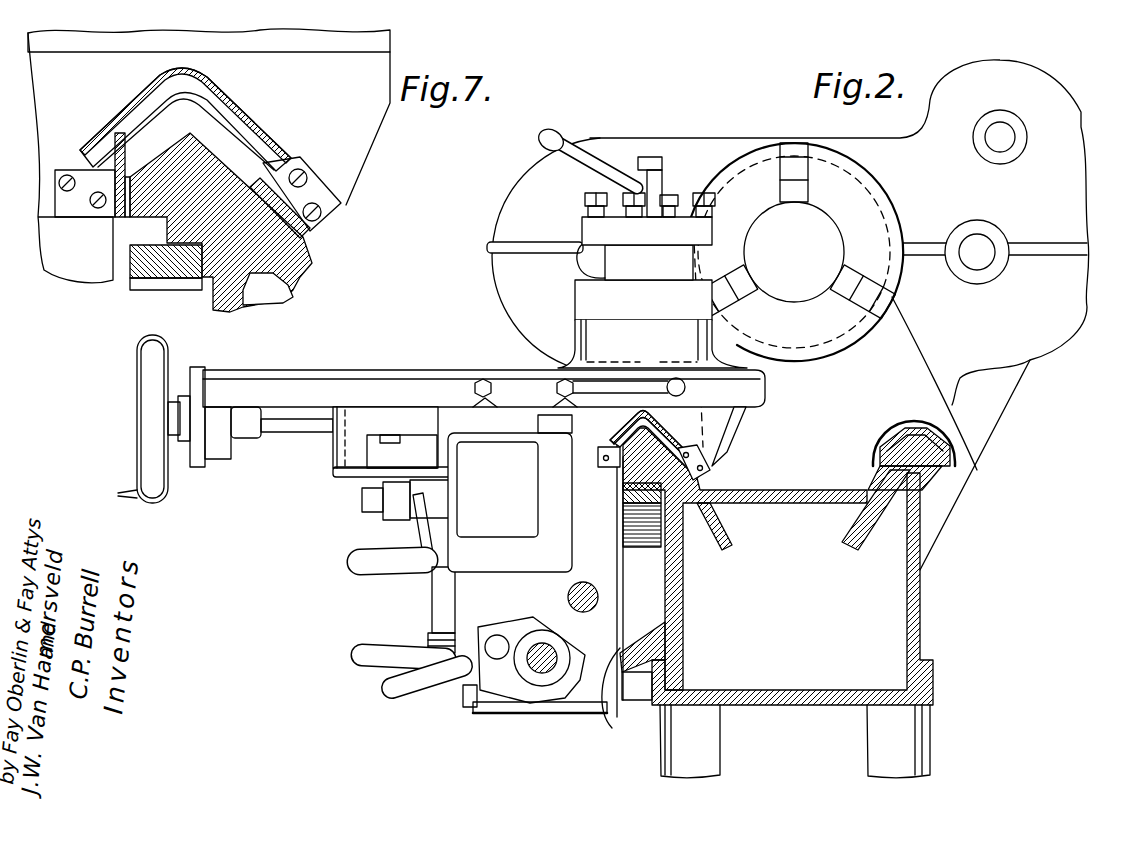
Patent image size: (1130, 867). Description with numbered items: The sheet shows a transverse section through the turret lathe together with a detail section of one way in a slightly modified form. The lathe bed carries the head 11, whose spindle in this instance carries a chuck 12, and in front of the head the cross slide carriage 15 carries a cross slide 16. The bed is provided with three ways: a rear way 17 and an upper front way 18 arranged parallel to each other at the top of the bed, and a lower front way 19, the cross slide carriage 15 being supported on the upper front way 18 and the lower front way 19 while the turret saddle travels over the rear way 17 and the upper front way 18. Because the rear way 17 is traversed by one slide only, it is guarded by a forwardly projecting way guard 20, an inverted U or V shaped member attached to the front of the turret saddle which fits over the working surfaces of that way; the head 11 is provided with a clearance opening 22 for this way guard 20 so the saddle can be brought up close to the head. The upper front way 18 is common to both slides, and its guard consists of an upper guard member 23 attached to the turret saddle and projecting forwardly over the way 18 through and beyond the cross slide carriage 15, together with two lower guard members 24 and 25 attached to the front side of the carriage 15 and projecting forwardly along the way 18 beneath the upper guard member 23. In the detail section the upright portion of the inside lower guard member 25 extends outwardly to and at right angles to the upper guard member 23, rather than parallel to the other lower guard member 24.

In FIG. 2, the head 11 is at (673, 150).
In FIG. 2, the chuck 12 is at (752, 173).
In FIG. 7, the cross slide carriage 15 is at (350, 153).
In FIG. 2, the cross slide carriage 15 is at (723, 443).
In FIG. 2, the cross slide 16 is at (766, 380).
In FIG. 2, the rear way 17 is at (890, 440).
In FIG. 7, the upper front way 18 is at (200, 153).
In FIG. 2, the upper front way 18 is at (680, 431).
In FIG. 2, the lower front way 19 is at (640, 647).
In FIG. 2, the forwardly projecting way guard 20 is at (912, 427).
In FIG. 2, the clearance opening 22 is at (940, 436).
In FIG. 7, the upper guard member 23 is at (133, 125).
In FIG. 2, the upper guard member 23 is at (660, 426).
In FIG. 7, the lower guard member 24 is at (140, 135).
In FIG. 2, the lower guard member 24 is at (612, 465).
In FIG. 7, the lower guard member 25 is at (262, 180).
In FIG. 2, the lower guard member 25 is at (713, 466).